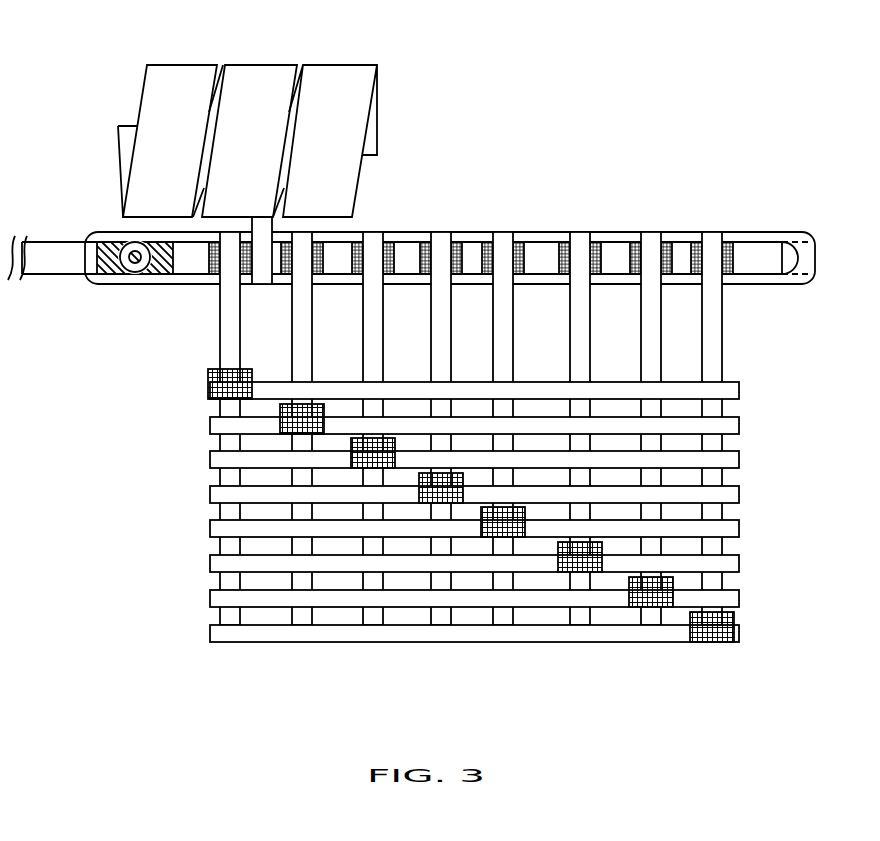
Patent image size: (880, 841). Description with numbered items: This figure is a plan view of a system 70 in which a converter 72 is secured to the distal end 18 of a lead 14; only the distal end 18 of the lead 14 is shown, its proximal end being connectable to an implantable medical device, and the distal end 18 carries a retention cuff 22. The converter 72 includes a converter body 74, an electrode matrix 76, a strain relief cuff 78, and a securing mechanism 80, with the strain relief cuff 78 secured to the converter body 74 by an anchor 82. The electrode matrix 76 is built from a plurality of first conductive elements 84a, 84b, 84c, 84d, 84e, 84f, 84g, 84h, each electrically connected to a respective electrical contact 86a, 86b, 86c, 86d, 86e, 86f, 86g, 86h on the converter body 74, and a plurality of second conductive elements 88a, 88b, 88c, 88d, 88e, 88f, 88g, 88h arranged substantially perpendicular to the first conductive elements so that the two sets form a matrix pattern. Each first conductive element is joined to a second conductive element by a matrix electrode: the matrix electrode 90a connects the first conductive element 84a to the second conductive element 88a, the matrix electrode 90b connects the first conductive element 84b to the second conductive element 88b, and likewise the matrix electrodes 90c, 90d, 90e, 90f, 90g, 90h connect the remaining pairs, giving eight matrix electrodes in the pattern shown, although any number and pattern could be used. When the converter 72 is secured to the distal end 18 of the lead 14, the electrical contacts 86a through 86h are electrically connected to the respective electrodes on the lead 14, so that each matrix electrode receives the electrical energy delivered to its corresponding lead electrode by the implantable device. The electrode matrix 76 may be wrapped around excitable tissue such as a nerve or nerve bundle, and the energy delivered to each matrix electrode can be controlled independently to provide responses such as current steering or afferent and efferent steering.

The lead 14 is at (64, 241).
The distal end 18 is at (776, 238).
The retention cuff 22 is at (112, 275).
The system 70 is at (553, 118).
The converter 72 is at (127, 360).
The converter body 74 is at (540, 232).
The electrode matrix 76 is at (193, 540).
The strain relief cuff 78 is at (332, 72).
The securing mechanism 80 is at (145, 263).
The anchor 82 is at (267, 224).
The first conductive element 84a is at (223, 618).
The first conductive element 84b is at (295, 618).
The first conductive element 84c is at (366, 618).
The first conductive element 84d is at (434, 618).
The first conductive element 84e is at (497, 618).
The first conductive element 84f is at (578, 617).
The first conductive element 84g is at (653, 617).
The first conductive element 84h is at (722, 610).
The electrical contact 86a is at (208, 276).
The electrical contact 86b is at (280, 276).
The electrical contact 86c is at (351, 276).
The electrical contact 86d is at (419, 276).
The electrical contact 86e is at (481, 276).
The electrical contact 86f is at (558, 276).
The electrical contact 86g is at (629, 276).
The electrical contact 86h is at (690, 276).
The second conductive element 88a is at (741, 391).
The second conductive element 88b is at (741, 426).
The second conductive element 88c is at (741, 460).
The second conductive element 88d is at (741, 495).
The second conductive element 88e is at (741, 529).
The second conductive element 88f is at (741, 564).
The second conductive element 88g is at (741, 599).
The second conductive element 88h is at (739, 634).
The matrix electrode 90a is at (208, 383).
The matrix electrode 90b is at (320, 410).
The matrix electrode 90c is at (393, 445).
The matrix electrode 90d is at (462, 478).
The matrix electrode 90e is at (521, 533).
The matrix electrode 90f is at (598, 572).
The matrix electrode 90g is at (668, 607).
The matrix electrode 90h is at (690, 642).